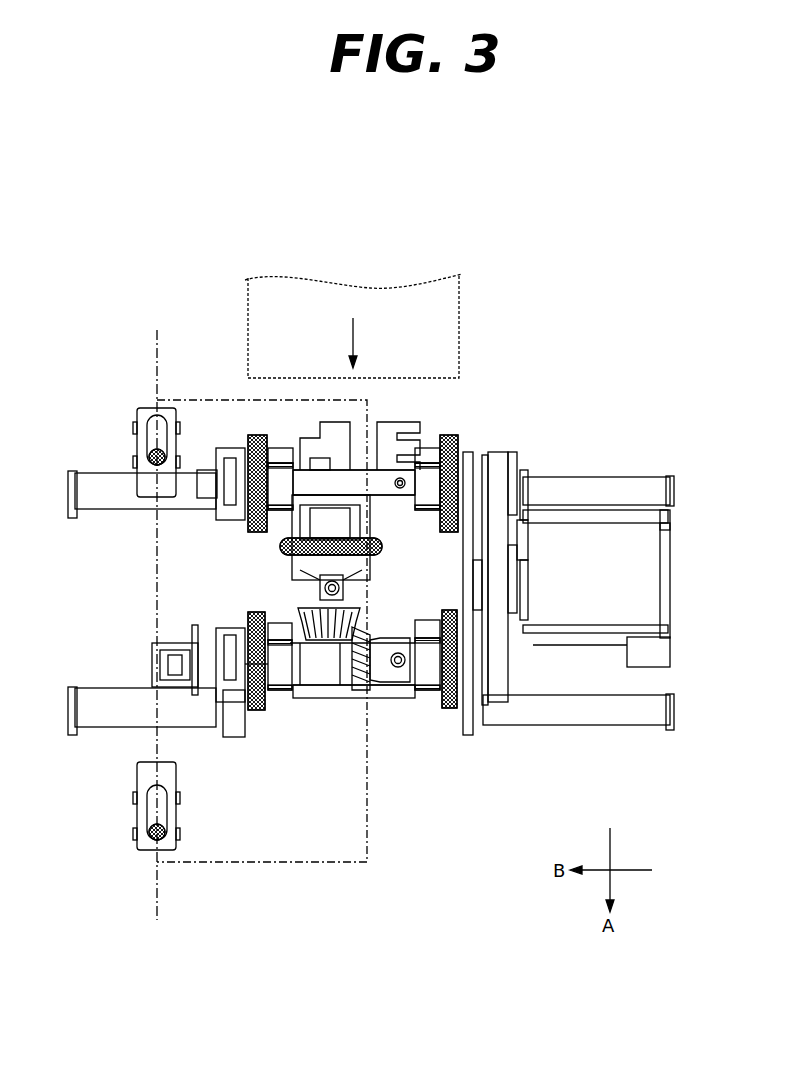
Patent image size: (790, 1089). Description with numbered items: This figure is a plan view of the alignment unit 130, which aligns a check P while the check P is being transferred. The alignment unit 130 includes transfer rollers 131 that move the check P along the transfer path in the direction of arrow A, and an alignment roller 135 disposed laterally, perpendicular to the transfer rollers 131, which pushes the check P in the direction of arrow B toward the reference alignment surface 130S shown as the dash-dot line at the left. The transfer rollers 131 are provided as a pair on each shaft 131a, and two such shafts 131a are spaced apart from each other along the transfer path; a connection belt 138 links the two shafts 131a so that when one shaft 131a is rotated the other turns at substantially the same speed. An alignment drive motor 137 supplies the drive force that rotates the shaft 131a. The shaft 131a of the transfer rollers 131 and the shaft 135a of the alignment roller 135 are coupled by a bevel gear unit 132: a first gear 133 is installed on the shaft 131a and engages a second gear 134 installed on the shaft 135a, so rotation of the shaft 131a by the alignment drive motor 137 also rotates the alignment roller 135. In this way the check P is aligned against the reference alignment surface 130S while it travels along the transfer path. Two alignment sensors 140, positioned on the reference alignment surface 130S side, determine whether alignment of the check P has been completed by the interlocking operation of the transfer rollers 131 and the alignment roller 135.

The alignment unit 130 is at (547, 390).
The reference alignment surface 130S is at (155, 347).
The transfer roller 131 is at (452, 438).
The shaft of the transfer roller 131a is at (355, 485).
The bevel gear unit 132 is at (326, 706).
The first gear 133 is at (353, 665).
The second gear 134 is at (325, 670).
The alignment roller 135 is at (290, 543).
The shaft of the alignment roller 135a is at (330, 585).
The alignment drive motor 137 is at (590, 605).
The connection belt 138 is at (500, 458).
The alignment sensor 140 is at (188, 437).
The check P is at (460, 325).